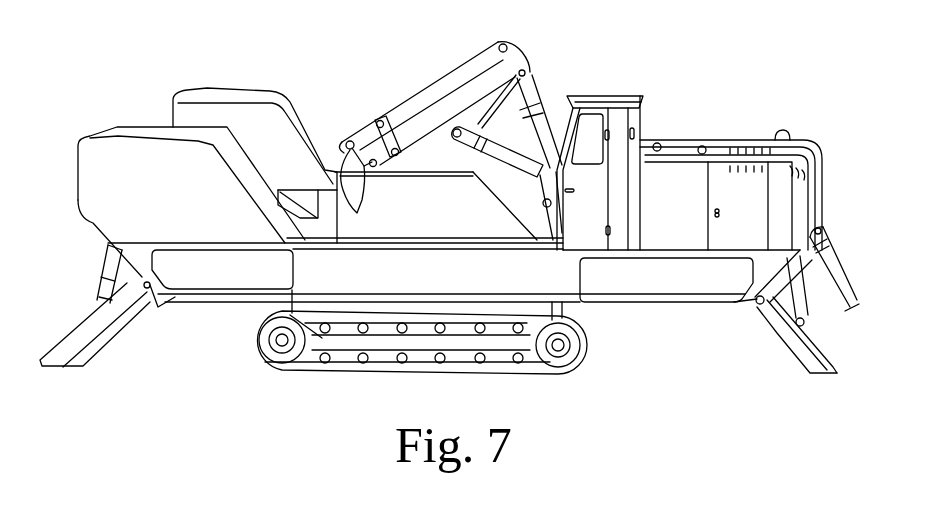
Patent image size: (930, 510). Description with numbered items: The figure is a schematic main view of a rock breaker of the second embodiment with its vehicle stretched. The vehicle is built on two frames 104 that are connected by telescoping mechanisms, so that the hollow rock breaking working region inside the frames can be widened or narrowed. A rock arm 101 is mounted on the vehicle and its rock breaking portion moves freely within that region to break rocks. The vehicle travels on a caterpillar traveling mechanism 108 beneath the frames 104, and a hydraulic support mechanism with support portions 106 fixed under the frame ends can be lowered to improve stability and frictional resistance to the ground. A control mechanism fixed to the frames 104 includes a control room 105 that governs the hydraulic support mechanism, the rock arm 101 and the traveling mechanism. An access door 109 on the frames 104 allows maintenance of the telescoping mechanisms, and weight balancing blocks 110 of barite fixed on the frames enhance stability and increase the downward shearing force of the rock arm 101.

The rock arm 101 is at (455, 70).
The frame 104 is at (545, 362).
The control room 105 is at (617, 123).
The support portion 106 is at (838, 290).
The caterpillar traveling mechanism 108 is at (463, 362).
The access door 109 is at (662, 282).
The weight balancing block 110 is at (252, 97).